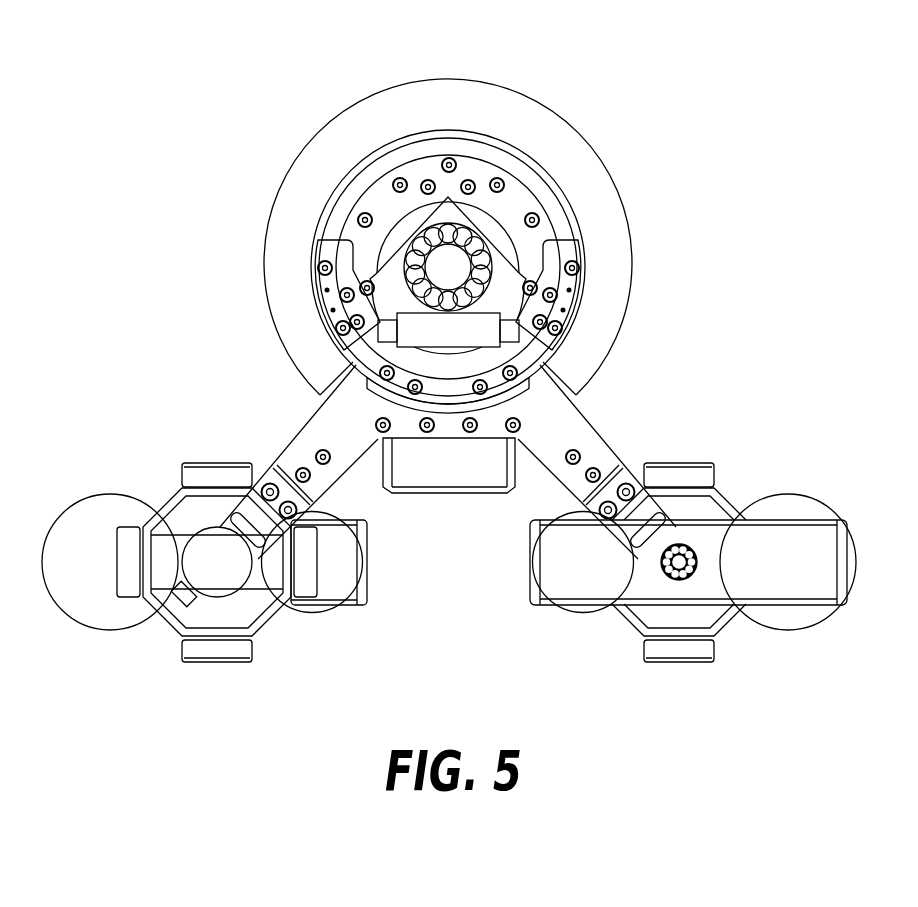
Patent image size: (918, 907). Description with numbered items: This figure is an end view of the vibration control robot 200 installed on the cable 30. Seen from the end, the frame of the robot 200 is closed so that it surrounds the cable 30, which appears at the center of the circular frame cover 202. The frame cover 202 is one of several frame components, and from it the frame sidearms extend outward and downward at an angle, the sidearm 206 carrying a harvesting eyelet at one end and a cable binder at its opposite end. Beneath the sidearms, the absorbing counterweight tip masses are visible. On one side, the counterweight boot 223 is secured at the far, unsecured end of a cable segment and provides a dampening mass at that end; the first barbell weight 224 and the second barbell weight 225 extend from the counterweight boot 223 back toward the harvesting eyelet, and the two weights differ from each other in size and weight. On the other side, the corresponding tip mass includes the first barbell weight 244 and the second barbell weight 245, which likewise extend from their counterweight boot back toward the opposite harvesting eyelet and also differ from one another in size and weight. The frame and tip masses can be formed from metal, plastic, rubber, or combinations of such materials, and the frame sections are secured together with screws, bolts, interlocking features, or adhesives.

The robot 200 is at (95, 58).
The frame cover 202 is at (305, 178).
The cable 30 is at (460, 279).
The frame sidearm 206 is at (562, 484).
The counterweight boot 223 is at (796, 575).
The first barbell weight 224 is at (786, 622).
The second barbell weight 225 is at (580, 607).
The first barbell weight 244 is at (112, 623).
The second barbell weight 245 is at (316, 608).